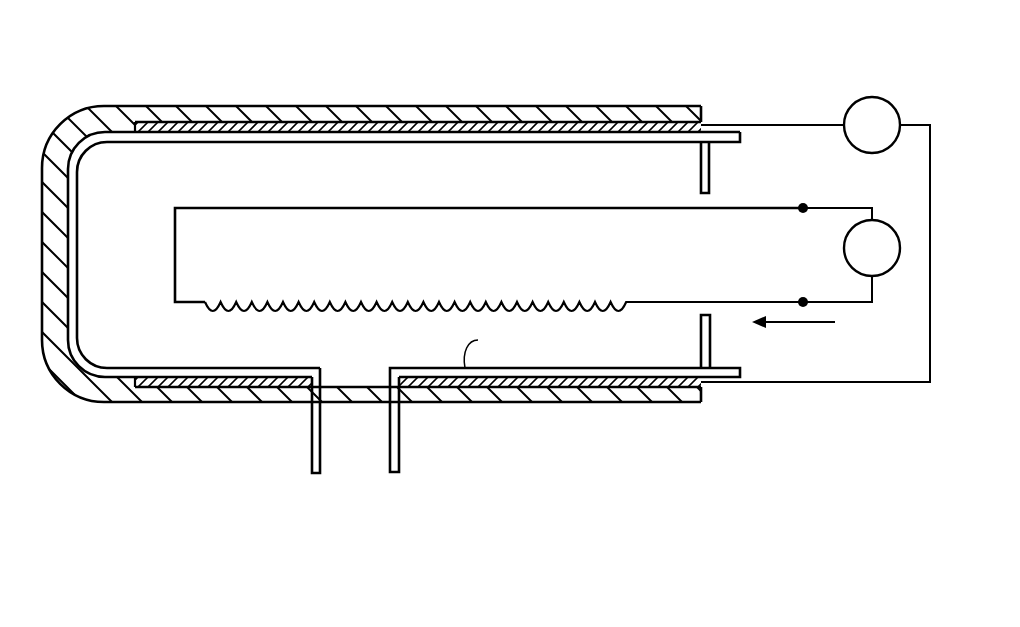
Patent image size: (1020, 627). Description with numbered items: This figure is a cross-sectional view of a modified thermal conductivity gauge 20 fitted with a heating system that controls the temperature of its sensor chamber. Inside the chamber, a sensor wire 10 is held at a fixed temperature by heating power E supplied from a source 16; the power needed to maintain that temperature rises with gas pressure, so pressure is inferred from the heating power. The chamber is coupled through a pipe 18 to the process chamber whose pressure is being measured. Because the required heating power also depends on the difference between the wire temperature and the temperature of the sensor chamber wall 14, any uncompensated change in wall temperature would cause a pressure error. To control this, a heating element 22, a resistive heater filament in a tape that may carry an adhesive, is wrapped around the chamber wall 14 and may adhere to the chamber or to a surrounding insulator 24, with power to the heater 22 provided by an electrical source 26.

The sensor wire 10 is at (579, 301).
The sensor chamber wall 14 is at (634, 368).
The source 16 is at (884, 225).
The pipe 18 is at (312, 436).
The measuring device 20 is at (668, 67).
The heating element 22 is at (704, 125).
The insulator 24 is at (551, 106).
The electrical source 26 is at (889, 104).